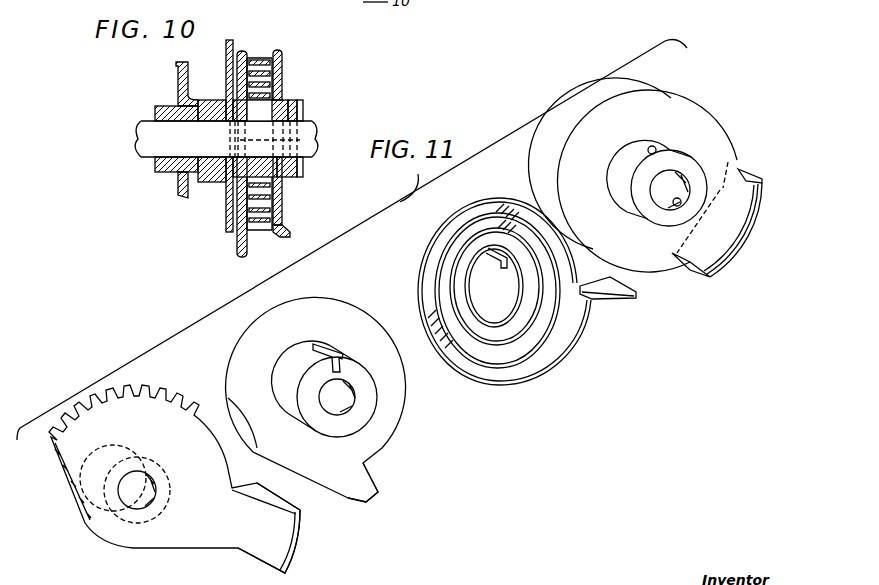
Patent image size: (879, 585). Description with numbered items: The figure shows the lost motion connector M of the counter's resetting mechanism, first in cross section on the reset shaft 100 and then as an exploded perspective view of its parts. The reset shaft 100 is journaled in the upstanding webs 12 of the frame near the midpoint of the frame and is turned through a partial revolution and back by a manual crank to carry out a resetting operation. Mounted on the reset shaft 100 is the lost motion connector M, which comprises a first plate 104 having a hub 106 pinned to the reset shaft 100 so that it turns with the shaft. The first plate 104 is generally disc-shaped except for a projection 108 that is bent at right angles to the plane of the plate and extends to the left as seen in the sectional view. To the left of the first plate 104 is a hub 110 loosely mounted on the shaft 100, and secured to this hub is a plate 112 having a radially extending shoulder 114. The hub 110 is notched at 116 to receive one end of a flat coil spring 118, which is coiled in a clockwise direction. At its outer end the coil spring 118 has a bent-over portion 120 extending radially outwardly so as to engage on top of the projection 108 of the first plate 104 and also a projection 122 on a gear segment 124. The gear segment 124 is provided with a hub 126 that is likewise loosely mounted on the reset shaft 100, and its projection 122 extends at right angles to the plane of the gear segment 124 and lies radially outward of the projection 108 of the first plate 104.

In FIG. 10, the upstanding web 12 is at (178, 78).
In FIG. 10, the reset shaft 100 is at (144, 127).
In FIG. 10, the first plate 104 is at (279, 81).
In FIG. 11, the first plate 104 is at (662, 103).
In FIG. 10, the hub 106 is at (303, 110).
In FIG. 11, the hub 106 is at (673, 165).
In FIG. 10, the projection 108 is at (287, 232).
In FIG. 11, the projection 108 is at (743, 177).
In FIG. 10, the hub 110 is at (252, 180).
In FIG. 11, the hub 110 is at (367, 407).
In FIG. 10, the plate 112 is at (240, 50).
In FIG. 11, the plate 112 is at (303, 305).
In FIG. 10, the radially extending shoulder 114 is at (238, 248).
In FIG. 11, the radially extending shoulder 114 is at (362, 478).
In FIG. 10, the notch 116 is at (277, 105).
In FIG. 11, the notch 116 is at (343, 358).
In FIG. 10, the flat coil spring 118 is at (260, 57).
In FIG. 11, the flat coil spring 118 is at (483, 203).
In FIG. 11, the bent-over portion 120 is at (617, 300).
In FIG. 10, the projection 122 is at (233, 200).
In FIG. 11, the projection 122 is at (263, 553).
In FIG. 10, the gear segment 124 is at (225, 53).
In FIG. 11, the gear segment 124 is at (152, 388).
In FIG. 10, the hub 126 is at (200, 180).
In FIG. 11, the hub 126 is at (88, 485).
In FIG. 10, the lost motion connector M is at (284, 54).
In FIG. 11, the lost motion connector M is at (453, 383).